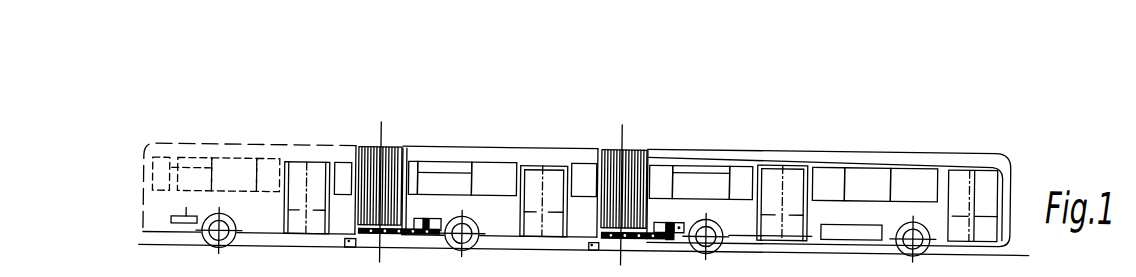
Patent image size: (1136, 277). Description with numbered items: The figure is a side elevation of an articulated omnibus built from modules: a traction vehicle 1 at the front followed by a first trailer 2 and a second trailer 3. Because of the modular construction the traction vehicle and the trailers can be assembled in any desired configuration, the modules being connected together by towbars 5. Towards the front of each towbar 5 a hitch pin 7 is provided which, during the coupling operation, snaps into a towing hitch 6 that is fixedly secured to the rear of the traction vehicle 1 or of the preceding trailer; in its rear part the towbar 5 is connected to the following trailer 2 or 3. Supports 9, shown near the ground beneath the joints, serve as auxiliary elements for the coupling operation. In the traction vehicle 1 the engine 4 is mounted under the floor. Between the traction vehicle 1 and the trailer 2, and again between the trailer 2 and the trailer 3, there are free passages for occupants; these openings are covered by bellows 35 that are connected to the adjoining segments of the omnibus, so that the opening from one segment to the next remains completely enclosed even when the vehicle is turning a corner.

The traction vehicle 1 is at (873, 164).
The trailer 2 is at (498, 156).
The trailer 3 is at (267, 150).
The bellows 35 is at (367, 164).
The engine 4 is at (857, 224).
The towbar 5 is at (418, 232).
The towing hitch 6 is at (680, 219).
The hitch pin 7 is at (669, 218).
The supports 9 is at (349, 241).